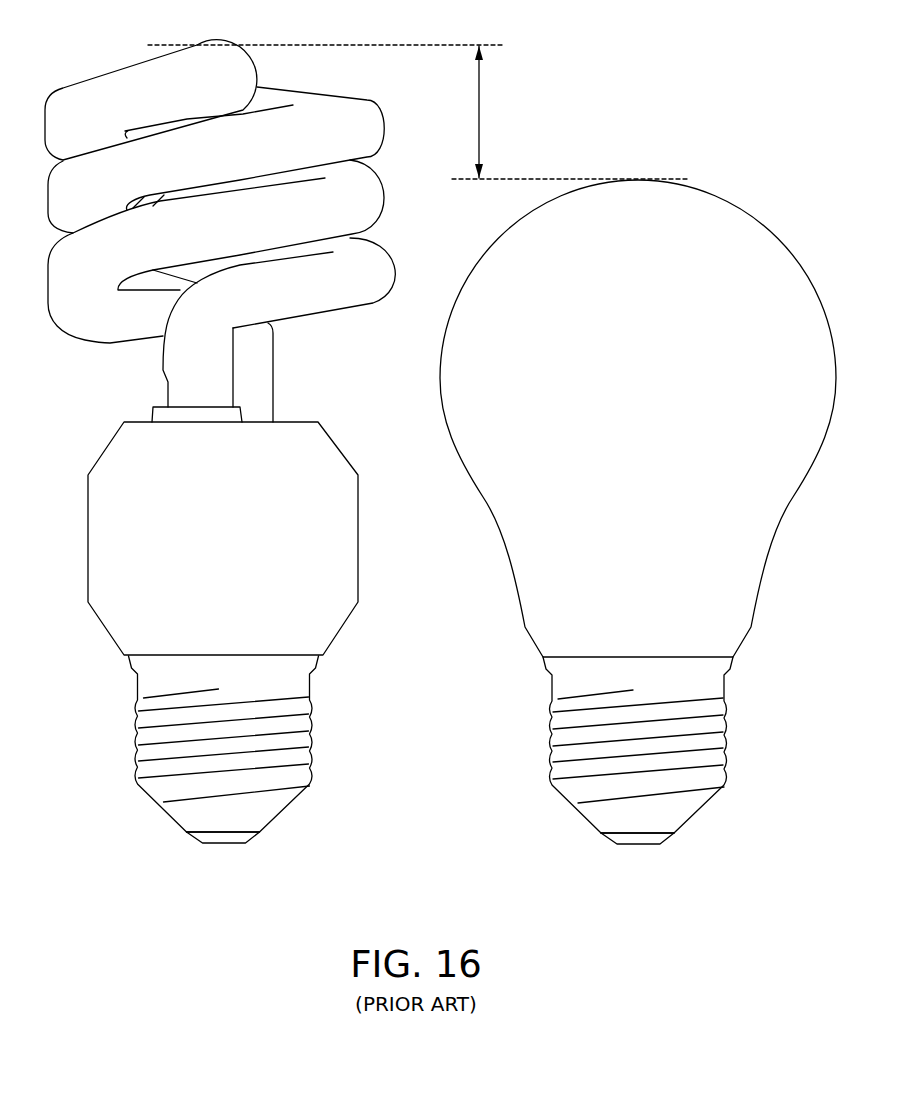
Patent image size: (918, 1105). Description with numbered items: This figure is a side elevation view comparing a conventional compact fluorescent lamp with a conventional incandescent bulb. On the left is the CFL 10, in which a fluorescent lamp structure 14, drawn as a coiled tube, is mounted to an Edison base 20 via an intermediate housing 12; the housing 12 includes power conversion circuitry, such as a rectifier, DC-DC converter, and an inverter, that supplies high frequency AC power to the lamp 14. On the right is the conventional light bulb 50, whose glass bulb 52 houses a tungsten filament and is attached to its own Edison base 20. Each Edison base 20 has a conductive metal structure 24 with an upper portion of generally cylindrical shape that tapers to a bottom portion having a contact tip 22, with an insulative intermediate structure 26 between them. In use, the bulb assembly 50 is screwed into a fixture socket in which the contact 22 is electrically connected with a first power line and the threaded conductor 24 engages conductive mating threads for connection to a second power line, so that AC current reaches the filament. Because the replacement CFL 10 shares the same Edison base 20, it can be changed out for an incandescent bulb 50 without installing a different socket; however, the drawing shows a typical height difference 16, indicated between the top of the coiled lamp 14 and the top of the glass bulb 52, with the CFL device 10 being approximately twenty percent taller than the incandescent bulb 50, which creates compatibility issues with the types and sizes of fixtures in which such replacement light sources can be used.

The CFL 10 is at (124, 32).
The intermediate housing 12 is at (360, 532).
The fluorescent lamp structure 14 is at (384, 127).
The height difference 16 is at (483, 112).
The Edison base 20 is at (102, 809).
The contact tip 22 is at (206, 847).
The conductive metal structure 24 is at (308, 713).
The insulative intermediate structure 26 is at (246, 840).
The light bulb 50 is at (757, 172).
The glass bulb 52 is at (773, 230).